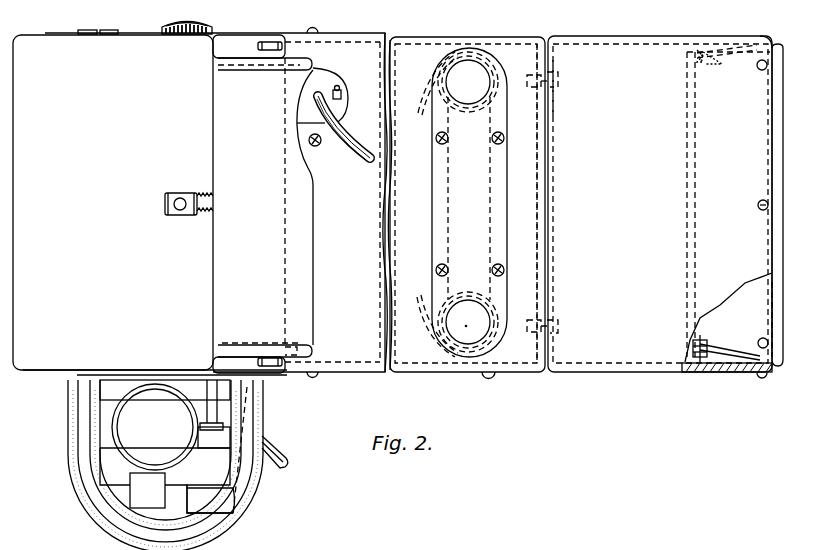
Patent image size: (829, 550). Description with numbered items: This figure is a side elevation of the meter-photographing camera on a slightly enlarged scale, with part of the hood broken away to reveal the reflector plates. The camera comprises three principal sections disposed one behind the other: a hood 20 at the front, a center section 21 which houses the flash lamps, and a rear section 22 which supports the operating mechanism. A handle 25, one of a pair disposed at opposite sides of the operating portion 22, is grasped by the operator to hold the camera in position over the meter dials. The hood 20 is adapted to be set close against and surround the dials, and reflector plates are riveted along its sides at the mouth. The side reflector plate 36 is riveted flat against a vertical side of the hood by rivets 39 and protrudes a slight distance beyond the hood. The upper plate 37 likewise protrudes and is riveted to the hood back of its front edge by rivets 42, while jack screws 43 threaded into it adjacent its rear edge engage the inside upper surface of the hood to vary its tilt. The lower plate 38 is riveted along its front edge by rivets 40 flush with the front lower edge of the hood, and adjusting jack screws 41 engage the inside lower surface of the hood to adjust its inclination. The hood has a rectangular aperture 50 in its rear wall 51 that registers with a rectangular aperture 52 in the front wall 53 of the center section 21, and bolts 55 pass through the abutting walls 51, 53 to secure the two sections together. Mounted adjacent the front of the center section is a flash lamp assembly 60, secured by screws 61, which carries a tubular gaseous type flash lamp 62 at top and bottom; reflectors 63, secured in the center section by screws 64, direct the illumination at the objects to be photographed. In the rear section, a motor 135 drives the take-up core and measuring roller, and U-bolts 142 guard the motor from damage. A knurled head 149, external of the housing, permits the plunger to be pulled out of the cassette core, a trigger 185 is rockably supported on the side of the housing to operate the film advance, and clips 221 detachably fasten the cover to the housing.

The hood 20 is at (633, 355).
The center section 21 is at (368, 352).
The rear section 22 is at (52, 347).
The handle 25 is at (302, 235).
The reflector plate 36 is at (778, 239).
The upper plate 37 is at (782, 44).
The lower plate 38 is at (722, 355).
The rivets 39 is at (758, 206).
The rivets 40 is at (762, 378).
The adjusting jack screws 41 is at (705, 350).
The rivets 42 is at (762, 36).
The jack screws 43 is at (712, 62).
The rectangular aperture 50 is at (553, 229).
The rear wall 51 is at (553, 101).
The rectangular aperture 52 is at (537, 215).
The front wall 53 is at (548, 100).
The bolts 55 is at (556, 78).
The flash lamp assembly 60 is at (432, 222).
The screws 61 is at (436, 140).
The tubular gaseous type flash lamp 62 is at (472, 108).
The reflectors 63 is at (418, 112).
The screws 64 is at (490, 376).
The motor 135 is at (140, 493).
The U-bolts 142 is at (248, 488).
The knurled head 149 is at (212, 24).
The trigger 185 is at (355, 157).
The clips 221 is at (180, 193).